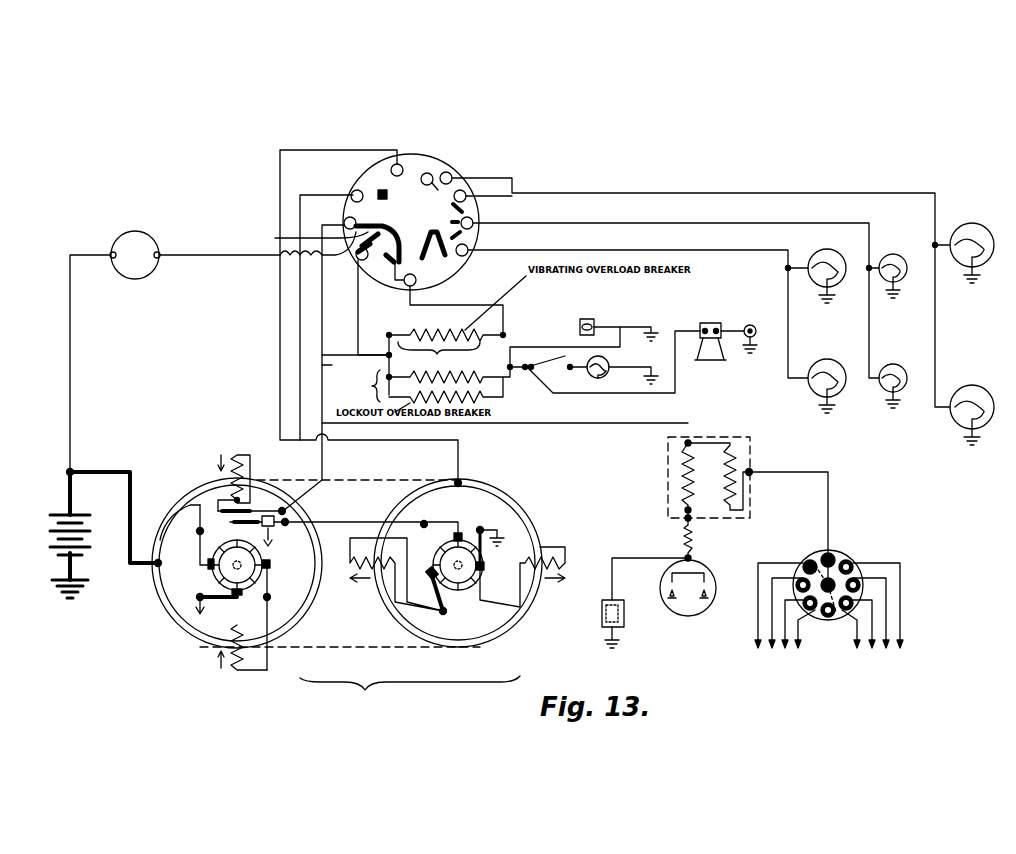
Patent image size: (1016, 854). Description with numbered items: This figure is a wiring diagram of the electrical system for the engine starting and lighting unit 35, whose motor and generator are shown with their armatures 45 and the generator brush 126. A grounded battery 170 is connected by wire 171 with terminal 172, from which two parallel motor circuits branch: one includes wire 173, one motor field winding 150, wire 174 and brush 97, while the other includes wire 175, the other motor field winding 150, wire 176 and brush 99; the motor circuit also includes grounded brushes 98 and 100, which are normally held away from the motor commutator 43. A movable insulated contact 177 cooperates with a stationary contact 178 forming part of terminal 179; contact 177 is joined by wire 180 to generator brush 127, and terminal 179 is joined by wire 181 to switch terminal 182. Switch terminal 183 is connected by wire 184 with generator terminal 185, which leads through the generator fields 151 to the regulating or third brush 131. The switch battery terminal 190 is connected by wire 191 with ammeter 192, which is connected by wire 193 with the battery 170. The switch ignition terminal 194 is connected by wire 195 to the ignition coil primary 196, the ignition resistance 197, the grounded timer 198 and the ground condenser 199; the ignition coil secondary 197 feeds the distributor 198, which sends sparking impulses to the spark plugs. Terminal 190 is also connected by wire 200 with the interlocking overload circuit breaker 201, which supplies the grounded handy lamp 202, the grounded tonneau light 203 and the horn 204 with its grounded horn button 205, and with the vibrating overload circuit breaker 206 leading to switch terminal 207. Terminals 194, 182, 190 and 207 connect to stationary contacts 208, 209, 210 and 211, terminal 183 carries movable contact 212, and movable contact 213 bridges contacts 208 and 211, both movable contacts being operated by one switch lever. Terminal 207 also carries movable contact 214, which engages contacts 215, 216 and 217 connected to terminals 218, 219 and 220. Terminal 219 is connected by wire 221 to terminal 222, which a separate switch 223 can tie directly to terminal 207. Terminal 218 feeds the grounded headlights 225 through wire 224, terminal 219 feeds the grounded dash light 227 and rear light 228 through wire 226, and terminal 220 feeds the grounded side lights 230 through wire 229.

The motor unit 35 is at (410, 691).
The motor commutator 43 is at (240, 596).
The armature 45 is at (462, 591).
The brush 97 is at (200, 566).
The grounded brush 98 is at (272, 540).
The brush 99 is at (272, 564).
The grounded brush 100 is at (212, 598).
The brush 126 is at (484, 571).
The generator brush 127 is at (466, 529).
The regulating or third brush 131 is at (427, 568).
The motor field winding 150 is at (243, 458).
The generator fields 151 is at (345, 570).
The battery 170 is at (53, 530).
The wire 171 is at (97, 470).
The terminal 172 is at (153, 569).
The wire 173 is at (188, 500).
The wire 174 is at (251, 468).
The wire 175 is at (186, 649).
The wire 176 is at (281, 632).
The movable insulated contact 177 is at (216, 537).
The stationary contact 178 is at (252, 503).
The terminal 179 is at (290, 512).
The wire 180 is at (346, 522).
The wire 181 is at (347, 364).
The switch terminal 182 is at (344, 220).
The switch terminal 183 is at (402, 164).
The wire 184 is at (280, 194).
The generator terminal 185 is at (463, 481).
The switch battery terminal 190 is at (357, 262).
The wire 191 is at (218, 253).
The ammeter 192 is at (118, 236).
The wire 193 is at (70, 338).
The switch ignition terminal 194 is at (353, 189).
The wire 195 is at (300, 319).
The ignition coil primary 196 is at (682, 470).
The ignition resistance 197 is at (735, 462).
The grounded timer 198 is at (704, 580).
The ground condenser 199 is at (601, 603).
The wire 200 is at (357, 359).
The interlocking overload circuit breaker 201 is at (426, 385).
The handy lamp 202 is at (580, 328).
The tonneau light 203 is at (610, 363).
The horn 204 is at (708, 362).
The horn button 205 is at (756, 331).
The vibrating overload circuit breaker 206 is at (446, 347).
The switch terminal 207 is at (418, 284).
The stationary contact 208 is at (383, 190).
The stationary contact 209 is at (305, 239).
The stationary contact 210 is at (380, 250).
The stationary contact 211 is at (390, 270).
The movable switch contact 212 is at (385, 240).
The movable switch contact 213 is at (411, 222).
The movable contact 214 is at (438, 253).
The contact 215 is at (512, 186).
The contact 216 is at (474, 227).
The contact 217 is at (466, 258).
The terminal 218 is at (478, 193).
The terminal 219 is at (474, 219).
The terminal 220 is at (476, 250).
The wire 221 is at (458, 190).
The terminal 222 is at (452, 174).
The separate switch 223 is at (428, 173).
The wire 224 is at (660, 193).
The headlights 225 is at (985, 258).
The wire 226 is at (680, 221).
The dash light 227 is at (897, 284).
The rear light 228 is at (880, 388).
The wire 229 is at (680, 250).
The side lights 230 is at (818, 290).